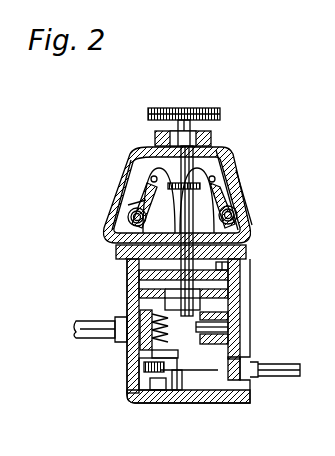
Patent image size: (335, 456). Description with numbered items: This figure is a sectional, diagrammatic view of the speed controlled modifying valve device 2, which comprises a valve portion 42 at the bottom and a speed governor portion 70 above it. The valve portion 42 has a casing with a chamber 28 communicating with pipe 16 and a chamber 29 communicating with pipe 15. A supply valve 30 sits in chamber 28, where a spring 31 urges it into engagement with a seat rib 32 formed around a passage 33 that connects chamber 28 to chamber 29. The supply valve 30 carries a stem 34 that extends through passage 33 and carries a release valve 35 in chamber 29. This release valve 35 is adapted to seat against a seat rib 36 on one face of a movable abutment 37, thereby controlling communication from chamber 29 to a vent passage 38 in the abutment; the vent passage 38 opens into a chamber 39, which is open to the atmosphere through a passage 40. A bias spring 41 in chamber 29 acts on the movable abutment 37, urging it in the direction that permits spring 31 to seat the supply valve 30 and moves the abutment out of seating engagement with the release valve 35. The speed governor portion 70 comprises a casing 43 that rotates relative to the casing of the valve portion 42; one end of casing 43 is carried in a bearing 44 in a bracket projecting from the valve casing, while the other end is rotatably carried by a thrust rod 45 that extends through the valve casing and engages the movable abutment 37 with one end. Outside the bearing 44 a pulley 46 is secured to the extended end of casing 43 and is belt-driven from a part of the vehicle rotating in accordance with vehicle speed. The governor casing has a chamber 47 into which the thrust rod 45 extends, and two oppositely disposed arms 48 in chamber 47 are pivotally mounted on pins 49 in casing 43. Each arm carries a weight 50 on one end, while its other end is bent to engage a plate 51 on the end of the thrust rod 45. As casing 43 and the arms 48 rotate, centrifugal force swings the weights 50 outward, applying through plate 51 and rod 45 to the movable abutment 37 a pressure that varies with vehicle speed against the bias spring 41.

The speed controlled modifying valve device 2 is at (124, 180).
The pipe 15 is at (76, 328).
The pipe 16 is at (300, 366).
The chamber 28 is at (248, 392).
The chamber 29 is at (226, 328).
The supply valve 30 is at (156, 390).
The spring 31 is at (170, 392).
The seat rib 32 is at (145, 376).
The passage 33 is at (140, 366).
The stem 34 is at (142, 356).
The release valve 35 is at (228, 314).
The seat rib 36 is at (182, 304).
The movable abutment 37 is at (240, 292).
The vent passage 38 is at (139, 292).
The chamber 39 is at (139, 278).
The passage 40 is at (244, 270).
The bias spring 41 is at (212, 342).
The valve portion 42 is at (128, 256).
The casing 43 is at (126, 206).
The bearing 44 is at (156, 136).
The thrust rod 45 is at (191, 230).
The pulley 46 is at (200, 108).
The chamber 47 is at (250, 226).
The arms 48 is at (120, 192).
The pins 49 is at (148, 172).
The weight 50 is at (130, 214).
The plate 51 is at (148, 210).
The speed governor portion 70 is at (224, 152).